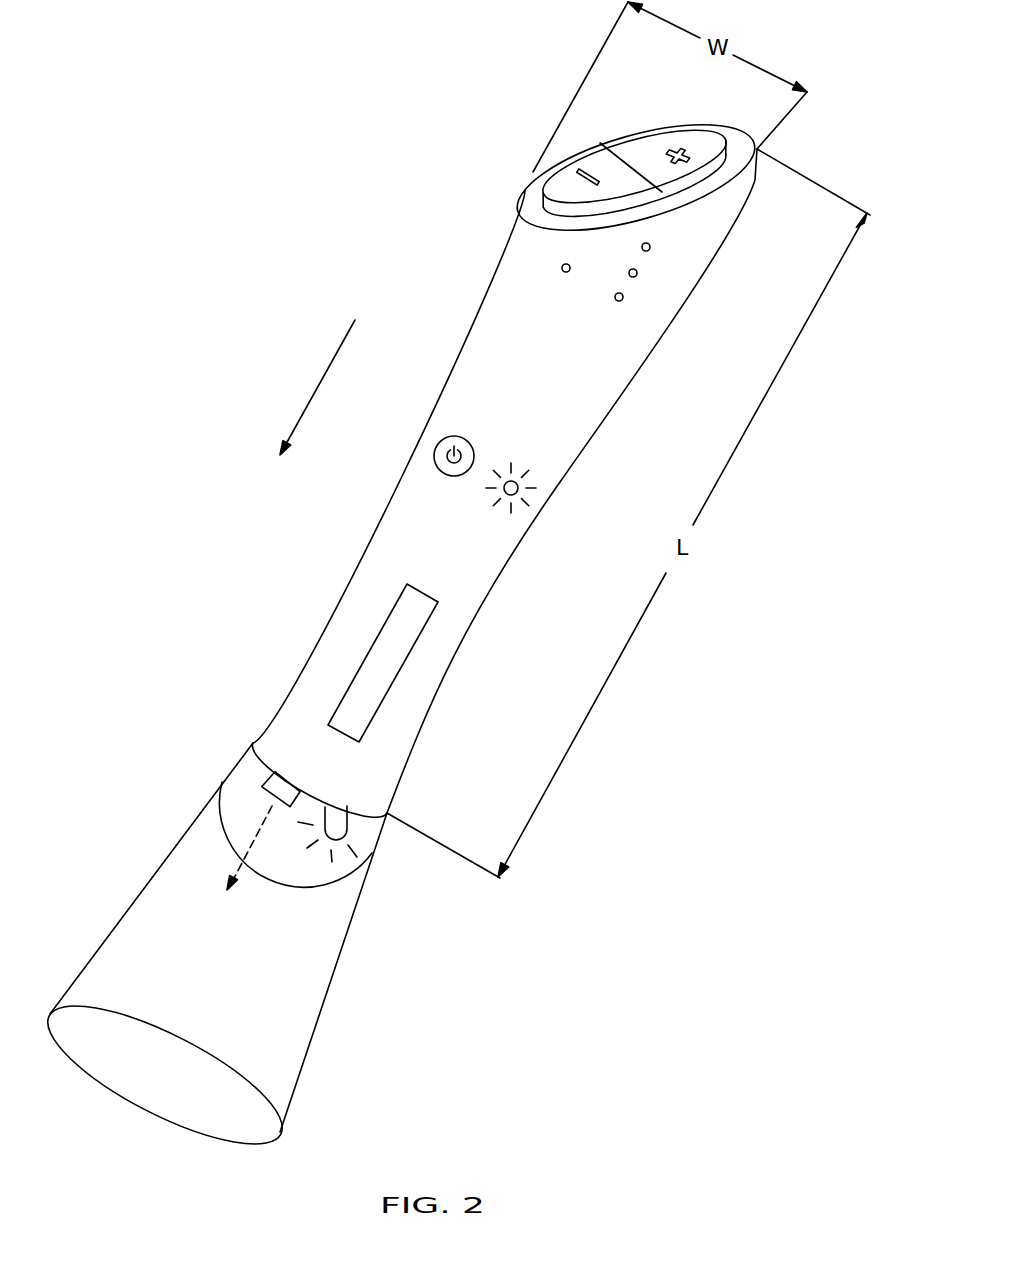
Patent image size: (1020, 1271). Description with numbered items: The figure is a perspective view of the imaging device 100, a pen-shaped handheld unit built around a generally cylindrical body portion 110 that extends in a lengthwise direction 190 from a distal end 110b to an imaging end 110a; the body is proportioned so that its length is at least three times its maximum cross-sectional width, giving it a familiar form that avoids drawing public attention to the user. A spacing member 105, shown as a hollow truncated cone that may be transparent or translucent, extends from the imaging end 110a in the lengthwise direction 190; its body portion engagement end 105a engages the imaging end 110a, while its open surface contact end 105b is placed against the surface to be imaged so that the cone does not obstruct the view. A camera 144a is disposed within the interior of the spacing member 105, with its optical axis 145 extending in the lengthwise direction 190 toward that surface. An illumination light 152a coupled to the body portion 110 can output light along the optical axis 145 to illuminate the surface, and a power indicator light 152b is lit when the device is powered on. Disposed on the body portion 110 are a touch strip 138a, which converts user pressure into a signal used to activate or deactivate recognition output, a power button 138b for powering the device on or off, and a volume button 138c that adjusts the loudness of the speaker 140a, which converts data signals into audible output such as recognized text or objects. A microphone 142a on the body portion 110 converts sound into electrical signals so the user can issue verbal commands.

The imaging device 100 is at (426, 621).
The spacing member 105 is at (326, 1008).
The body portion engagement end 105a is at (349, 866).
The surface contact end 105b is at (275, 1100).
The body portion 110 is at (505, 556).
The imaging end 110a is at (382, 782).
The distal end 110b is at (737, 198).
The touch strip 138a is at (393, 652).
The power button 138b is at (433, 454).
The volume button 138c is at (638, 146).
The speaker 140a is at (653, 233).
The microphone 142a is at (561, 268).
The camera 144a is at (274, 782).
The optical axis 145 is at (232, 845).
The illumination light 152a is at (348, 822).
The power indicator light 152b is at (523, 497).
The lengthwise direction 190 is at (320, 382).